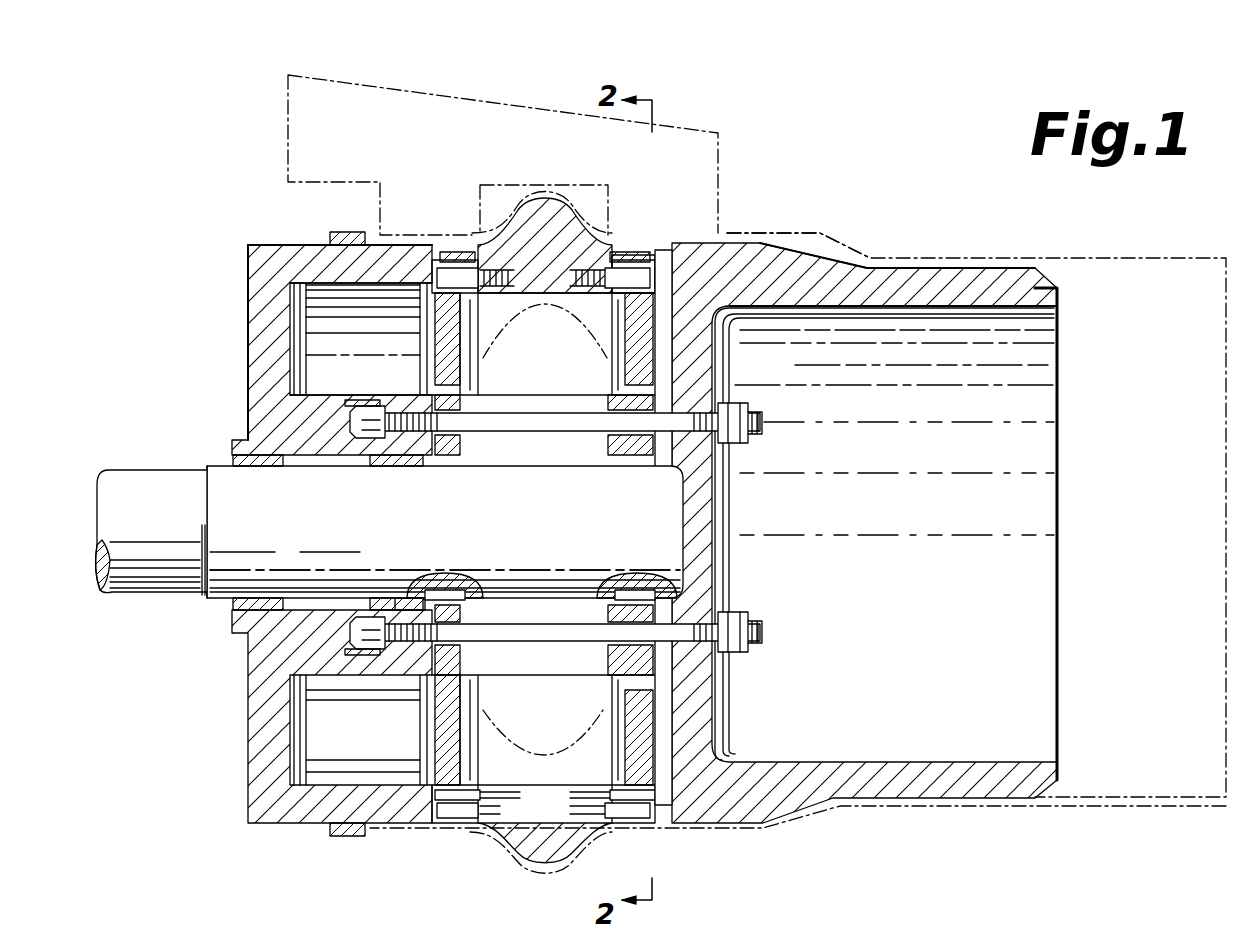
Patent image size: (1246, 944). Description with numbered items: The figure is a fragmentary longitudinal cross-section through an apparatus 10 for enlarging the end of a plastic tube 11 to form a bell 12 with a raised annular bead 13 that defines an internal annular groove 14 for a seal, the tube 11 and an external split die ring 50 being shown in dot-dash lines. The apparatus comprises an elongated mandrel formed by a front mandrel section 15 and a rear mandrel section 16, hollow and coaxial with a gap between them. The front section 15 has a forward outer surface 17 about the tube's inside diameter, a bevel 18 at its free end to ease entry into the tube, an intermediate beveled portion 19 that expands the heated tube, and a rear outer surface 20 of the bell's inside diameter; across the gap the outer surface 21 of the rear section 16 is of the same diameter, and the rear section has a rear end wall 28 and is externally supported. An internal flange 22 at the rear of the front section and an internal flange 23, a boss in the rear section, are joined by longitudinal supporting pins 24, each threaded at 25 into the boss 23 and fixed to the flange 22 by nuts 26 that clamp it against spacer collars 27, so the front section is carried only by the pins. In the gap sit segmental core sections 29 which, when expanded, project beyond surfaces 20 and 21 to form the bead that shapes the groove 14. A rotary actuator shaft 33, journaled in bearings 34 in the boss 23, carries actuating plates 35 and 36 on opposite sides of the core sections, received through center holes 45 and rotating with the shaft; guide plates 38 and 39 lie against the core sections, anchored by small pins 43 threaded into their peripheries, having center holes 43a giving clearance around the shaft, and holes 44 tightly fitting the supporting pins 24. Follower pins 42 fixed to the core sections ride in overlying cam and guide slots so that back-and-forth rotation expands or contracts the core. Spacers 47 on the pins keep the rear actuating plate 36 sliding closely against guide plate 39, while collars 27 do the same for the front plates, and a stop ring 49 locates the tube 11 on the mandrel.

The apparatus 10 is at (208, 708).
The plastic tube 11 is at (1088, 256).
The bell 12 is at (748, 243).
The raised annular bead 13 is at (565, 870).
The internal annular groove 14 is at (522, 830).
The front mandrel section 15 is at (943, 290).
The rear mandrel section 16 is at (265, 255).
The outer surface 17 is at (872, 268).
The bevel 18 is at (1062, 282).
The intermediate beveled portion 19 is at (795, 252).
The outer surface 20 is at (741, 230).
The outer surface 21 is at (265, 248).
The internal flange 22 is at (722, 372).
The internal flange 23 is at (302, 398).
The supporting pins 24 is at (540, 440).
The threaded end 25 is at (396, 597).
The nuts 26 is at (745, 446).
The spacer collars 27 is at (658, 400).
The rear end wall 28 is at (252, 298).
The segmental core sections 29 is at (548, 200).
The rotary actuator shaft 33 is at (389, 532).
The bearings 34 is at (262, 468).
The actuating plate 35 is at (640, 355).
The actuating plate 36 is at (455, 368).
The guide plate 38 is at (618, 256).
The guide plate 39 is at (492, 248).
The pins 42 is at (665, 262).
The anchoring pins 43 is at (470, 252).
The bearing ring 43a is at (498, 576).
The holes 44 is at (482, 440).
The center holes 45 is at (658, 465).
The spacers 47 is at (415, 403).
The stop ring 49 is at (340, 232).
The external split die ring 50 is at (432, 90).